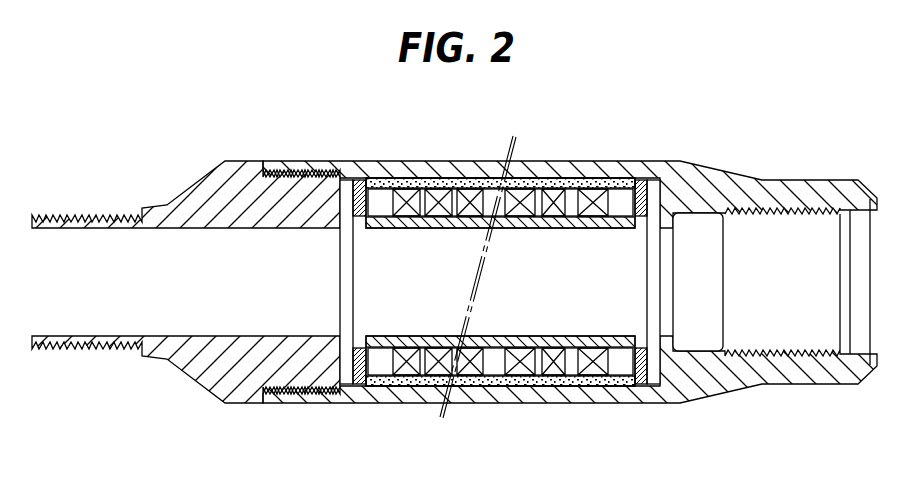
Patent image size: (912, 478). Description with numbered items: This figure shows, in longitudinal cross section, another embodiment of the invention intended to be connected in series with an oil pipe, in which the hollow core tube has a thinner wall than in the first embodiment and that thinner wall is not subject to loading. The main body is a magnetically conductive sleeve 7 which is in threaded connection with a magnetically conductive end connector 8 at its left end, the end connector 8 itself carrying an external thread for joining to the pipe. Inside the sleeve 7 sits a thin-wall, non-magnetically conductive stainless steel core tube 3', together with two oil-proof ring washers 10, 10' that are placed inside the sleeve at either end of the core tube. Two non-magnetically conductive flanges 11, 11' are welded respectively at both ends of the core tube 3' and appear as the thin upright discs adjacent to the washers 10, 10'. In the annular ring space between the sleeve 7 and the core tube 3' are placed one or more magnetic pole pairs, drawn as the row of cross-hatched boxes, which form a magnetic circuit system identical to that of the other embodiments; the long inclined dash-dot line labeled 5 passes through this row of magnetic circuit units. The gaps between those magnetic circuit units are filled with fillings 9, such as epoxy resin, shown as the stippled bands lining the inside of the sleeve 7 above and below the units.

The core tube 3' is at (500, 243).
The cartridge element 5 is at (475, 182).
The sleeve 7 is at (670, 180).
The end connector 8 is at (285, 198).
The fillings 9 is at (397, 180).
The oil-proof ring washer 10 is at (685, 316).
The oil-proof ring washer 10' is at (387, 316).
The flange 11 is at (674, 316).
The flange 11' is at (398, 316).